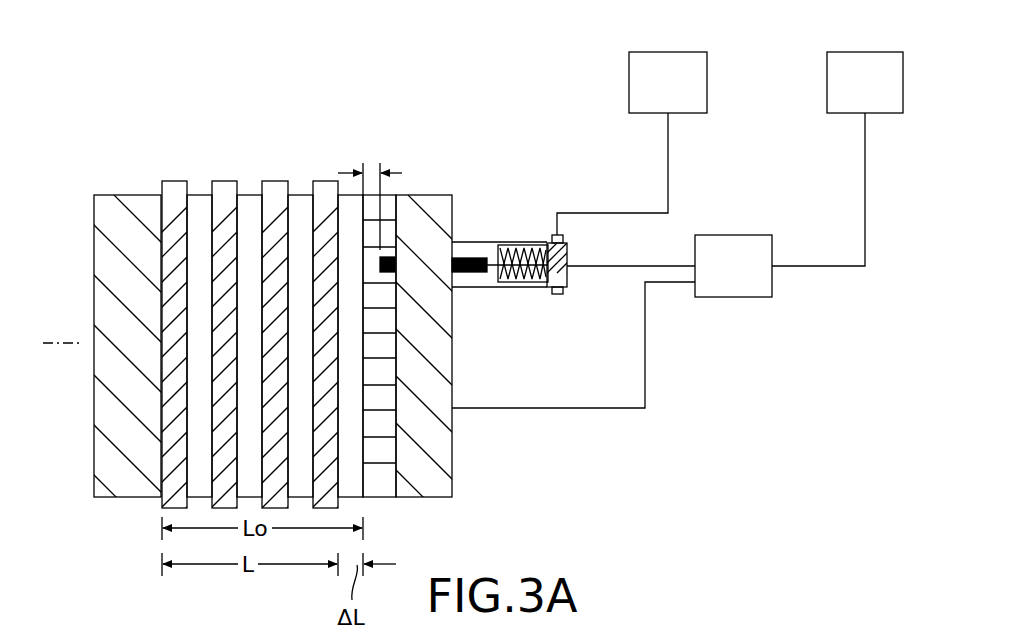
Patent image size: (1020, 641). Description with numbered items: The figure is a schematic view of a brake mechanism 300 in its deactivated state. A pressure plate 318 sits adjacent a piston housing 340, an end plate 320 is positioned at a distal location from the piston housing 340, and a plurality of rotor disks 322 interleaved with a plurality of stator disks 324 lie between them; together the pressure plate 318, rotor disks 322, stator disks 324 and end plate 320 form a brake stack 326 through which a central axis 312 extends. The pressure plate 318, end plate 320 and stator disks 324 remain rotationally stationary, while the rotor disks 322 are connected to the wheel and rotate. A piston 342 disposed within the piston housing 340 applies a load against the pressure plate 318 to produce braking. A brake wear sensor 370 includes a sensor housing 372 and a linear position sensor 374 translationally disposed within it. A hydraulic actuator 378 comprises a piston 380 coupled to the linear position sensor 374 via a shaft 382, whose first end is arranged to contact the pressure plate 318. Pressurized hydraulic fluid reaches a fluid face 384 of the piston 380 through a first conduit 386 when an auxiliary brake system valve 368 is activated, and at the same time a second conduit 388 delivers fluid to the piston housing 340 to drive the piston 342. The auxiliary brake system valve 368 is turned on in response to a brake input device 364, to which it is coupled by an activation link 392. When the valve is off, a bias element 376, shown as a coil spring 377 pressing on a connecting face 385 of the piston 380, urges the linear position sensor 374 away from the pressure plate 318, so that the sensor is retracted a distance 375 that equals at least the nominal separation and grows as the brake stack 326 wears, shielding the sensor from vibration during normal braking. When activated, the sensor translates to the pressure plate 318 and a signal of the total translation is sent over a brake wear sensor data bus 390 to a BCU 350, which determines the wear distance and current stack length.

The brake mechanism 300 is at (70, 140).
The central axis 312 is at (65, 343).
The pressure plate 318 is at (350, 220).
The end plate 320 is at (124, 197).
The rotor disks 322 is at (277, 196).
The stator disks 324 is at (250, 196).
The brake stack 326 is at (249, 128).
The piston housing 340 is at (453, 427).
The piston 342 is at (383, 465).
The BCU 350 is at (685, 93).
The brake input device 364 is at (837, 95).
The auxiliary brake system valve 368 is at (737, 276).
The brake wear sensor 370 is at (527, 217).
The sensor housing 372 is at (488, 290).
The linear position sensor 374 is at (470, 290).
The distance 375 is at (392, 163).
The bias element 376 is at (527, 245).
The coil spring 377 is at (508, 245).
The hydraulic actuator 378 is at (530, 284).
The piston 380 is at (586, 237).
The shaft 382 is at (487, 242).
The fluid face 384 is at (567, 285).
The connecting face 385 is at (557, 230).
The first conduit 386 is at (650, 264).
The second conduit 388 is at (605, 410).
The brake wear sensor data bus 390 is at (667, 150).
The activation link 392 is at (866, 210).